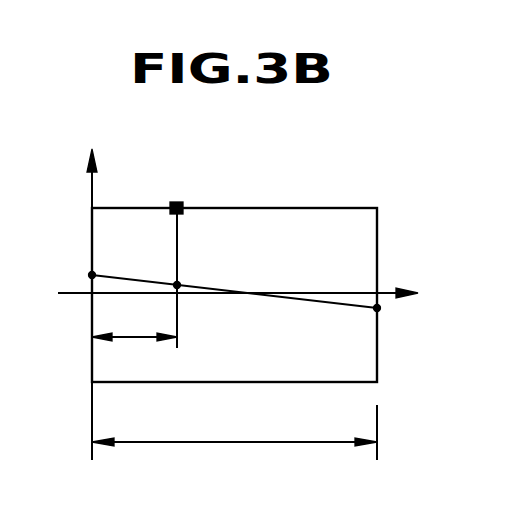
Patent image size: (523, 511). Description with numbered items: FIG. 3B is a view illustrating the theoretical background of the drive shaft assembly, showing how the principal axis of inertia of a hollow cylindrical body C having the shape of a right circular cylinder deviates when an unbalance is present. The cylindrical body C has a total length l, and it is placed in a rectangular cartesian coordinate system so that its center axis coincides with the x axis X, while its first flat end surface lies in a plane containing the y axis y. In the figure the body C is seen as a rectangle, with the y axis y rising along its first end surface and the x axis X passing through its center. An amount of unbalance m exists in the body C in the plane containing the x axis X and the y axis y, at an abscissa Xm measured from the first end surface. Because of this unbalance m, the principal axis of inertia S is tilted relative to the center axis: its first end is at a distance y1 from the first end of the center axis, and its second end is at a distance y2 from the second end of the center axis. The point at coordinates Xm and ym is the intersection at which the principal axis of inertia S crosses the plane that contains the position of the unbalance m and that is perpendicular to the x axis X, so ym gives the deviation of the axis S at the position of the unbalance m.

The hollow cylindrical body C is at (290, 208).
The principal axis of inertia S is at (347, 297).
The unbalance m is at (176, 262).
The y coordinate of intersection point ym is at (199, 269).
The deviation in first end surface y1 is at (79, 270).
The deviation in second end surface y2 is at (394, 316).
The x coordinate of unbalance position Xm is at (134, 325).
The total length l is at (234, 432).
The x axis X is at (249, 297).
The y axis y is at (91, 288).